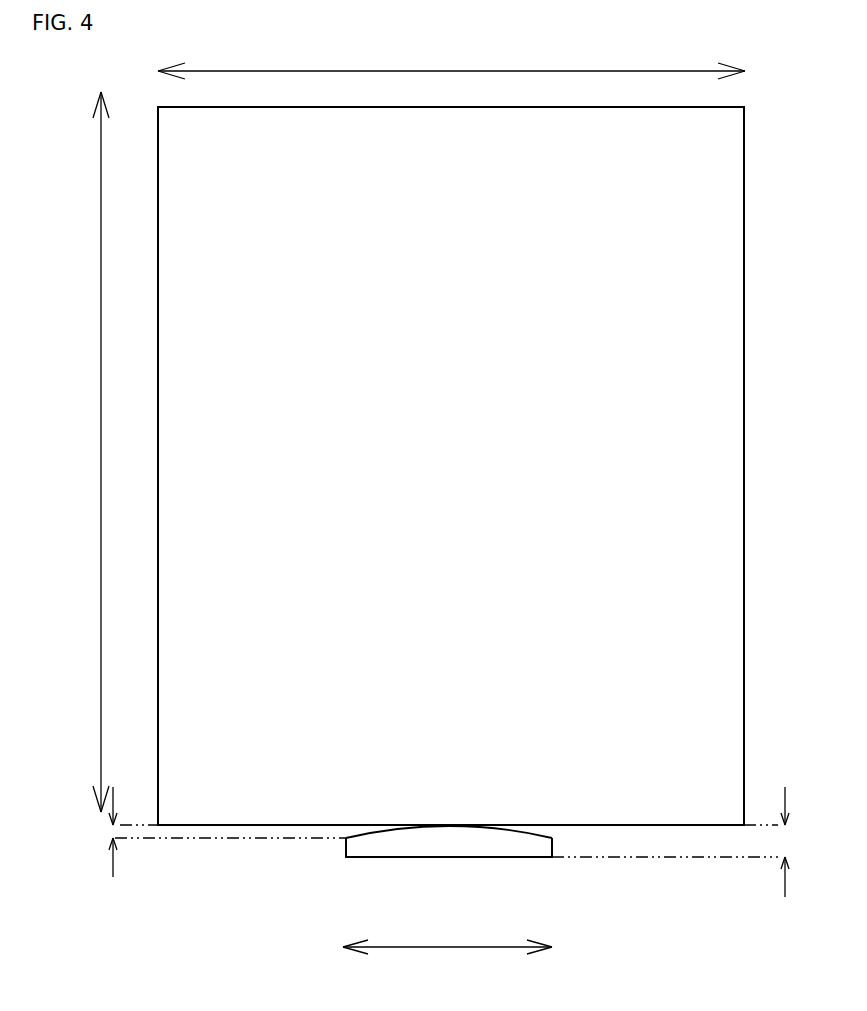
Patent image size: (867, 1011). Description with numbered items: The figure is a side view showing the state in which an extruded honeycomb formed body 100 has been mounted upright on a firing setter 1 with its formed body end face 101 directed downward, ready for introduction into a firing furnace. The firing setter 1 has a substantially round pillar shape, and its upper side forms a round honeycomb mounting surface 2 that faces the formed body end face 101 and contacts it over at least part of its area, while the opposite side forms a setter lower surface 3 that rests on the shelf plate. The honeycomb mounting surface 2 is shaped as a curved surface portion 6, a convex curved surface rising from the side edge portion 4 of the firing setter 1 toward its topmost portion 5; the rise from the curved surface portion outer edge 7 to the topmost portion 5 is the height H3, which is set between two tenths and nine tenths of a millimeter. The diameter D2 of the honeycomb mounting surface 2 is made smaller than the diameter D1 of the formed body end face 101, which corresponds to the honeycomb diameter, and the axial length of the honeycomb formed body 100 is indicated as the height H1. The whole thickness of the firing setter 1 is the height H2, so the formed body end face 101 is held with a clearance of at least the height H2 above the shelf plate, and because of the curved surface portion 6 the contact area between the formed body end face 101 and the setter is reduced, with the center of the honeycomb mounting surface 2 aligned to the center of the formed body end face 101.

The honeycomb formed body 100 is at (787, 420).
The formed body end face 101 is at (713, 827).
The firing setter 1 is at (457, 833).
The honeycomb mounting surface 2 is at (525, 843).
The setter lower surface 3 is at (420, 859).
The side edge portion 4 is at (346, 841).
The topmost portion 5 is at (449, 787).
The curved surface portion 6 is at (446, 826).
The curved surface portion outer edge 7 is at (555, 838).
The diameter of the formed body end face D1 is at (451, 69).
The diameter of the honeycomb mounting surface D2 is at (450, 949).
The length of the honeycomb formed body in an axial direction H1 is at (102, 452).
The height of the firing setter H2 is at (787, 843).
The height from the curved surface portion outer edge to the topmost portion H3 is at (112, 830).